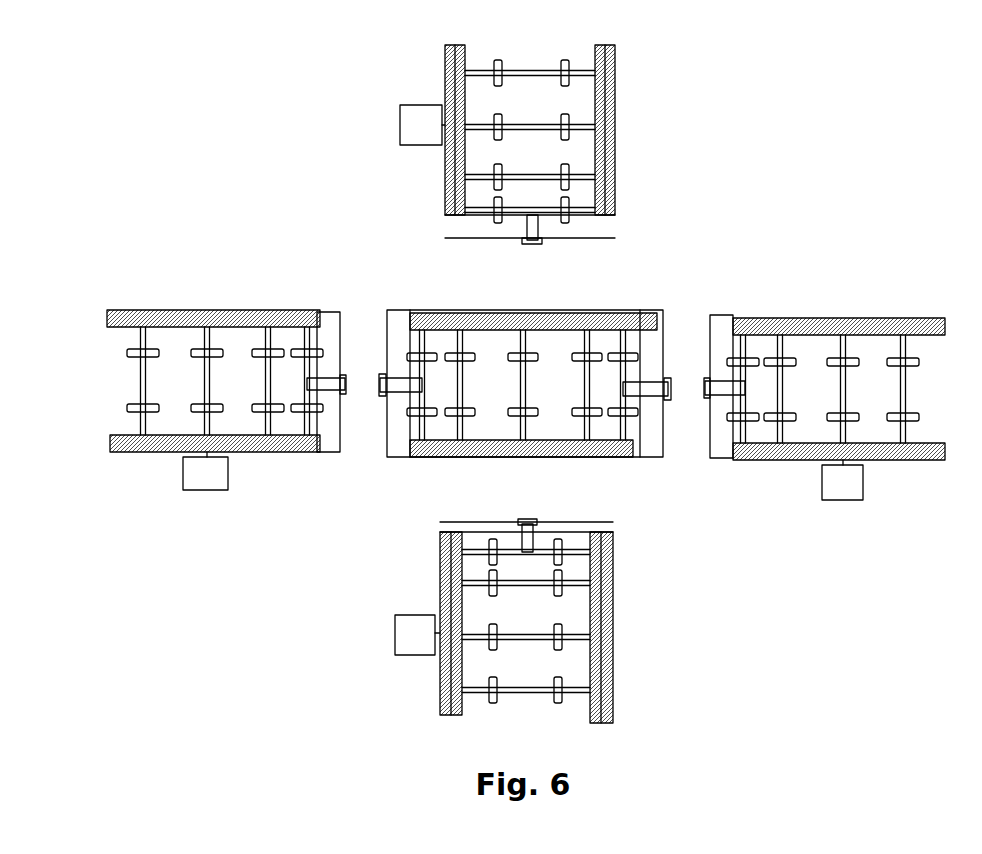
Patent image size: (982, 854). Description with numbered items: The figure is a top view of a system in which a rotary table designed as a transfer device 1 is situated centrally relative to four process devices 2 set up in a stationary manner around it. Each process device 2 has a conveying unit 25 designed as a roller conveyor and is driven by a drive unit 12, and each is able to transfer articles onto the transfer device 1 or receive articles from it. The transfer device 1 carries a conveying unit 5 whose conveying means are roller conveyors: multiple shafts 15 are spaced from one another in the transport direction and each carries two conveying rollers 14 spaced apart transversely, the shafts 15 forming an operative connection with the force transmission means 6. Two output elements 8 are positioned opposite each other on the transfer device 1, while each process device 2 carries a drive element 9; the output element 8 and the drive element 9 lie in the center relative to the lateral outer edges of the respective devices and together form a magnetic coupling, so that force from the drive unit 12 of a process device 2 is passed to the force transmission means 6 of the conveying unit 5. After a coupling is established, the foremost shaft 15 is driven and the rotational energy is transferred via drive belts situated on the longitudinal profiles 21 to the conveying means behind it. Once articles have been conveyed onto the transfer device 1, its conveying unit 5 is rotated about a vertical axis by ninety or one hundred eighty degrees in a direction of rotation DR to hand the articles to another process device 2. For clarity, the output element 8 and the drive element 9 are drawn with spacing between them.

The transfer device 1 is at (648, 280).
The process device 2 is at (218, 255).
The conveying unit 5 is at (392, 460).
The force transmission means 6 is at (400, 398).
The output element 8 is at (382, 377).
The drive element 9 is at (345, 376).
The drive unit 12 is at (412, 125).
The conveying roller 14 is at (470, 352).
The shaft 15 is at (413, 348).
The longitudinal profile 21 is at (647, 318).
The conveying unit 25 is at (437, 212).
The direction of rotation DR is at (550, 418).